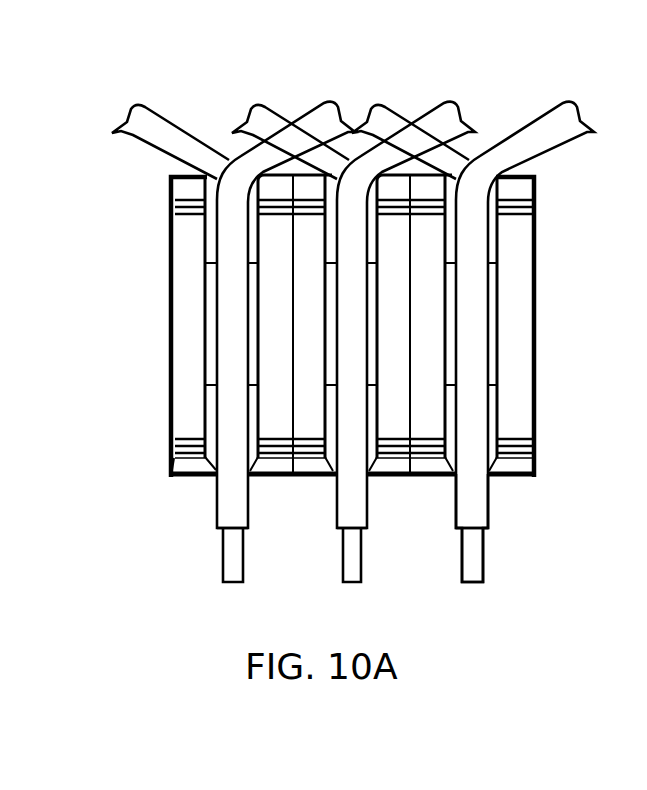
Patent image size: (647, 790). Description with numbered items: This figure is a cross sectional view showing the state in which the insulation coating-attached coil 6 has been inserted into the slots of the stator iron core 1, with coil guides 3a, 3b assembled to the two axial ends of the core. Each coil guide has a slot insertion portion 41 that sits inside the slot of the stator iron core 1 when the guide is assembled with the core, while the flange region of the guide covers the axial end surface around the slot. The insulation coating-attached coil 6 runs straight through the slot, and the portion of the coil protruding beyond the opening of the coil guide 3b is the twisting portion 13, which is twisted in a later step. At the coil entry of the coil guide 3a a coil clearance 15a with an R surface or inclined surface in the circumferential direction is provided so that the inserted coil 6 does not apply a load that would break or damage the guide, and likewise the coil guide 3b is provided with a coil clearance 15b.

The stator iron core 1 is at (531, 312).
The coil guide 3a is at (518, 188).
The coil guide 3b is at (517, 458).
The insulation coating-attached coil 6 is at (150, 142).
The twisting portion 13 is at (217, 483).
The coil clearance 15a is at (176, 218).
The coil clearance 15b is at (498, 475).
The slot insertion portion 41 is at (503, 395).